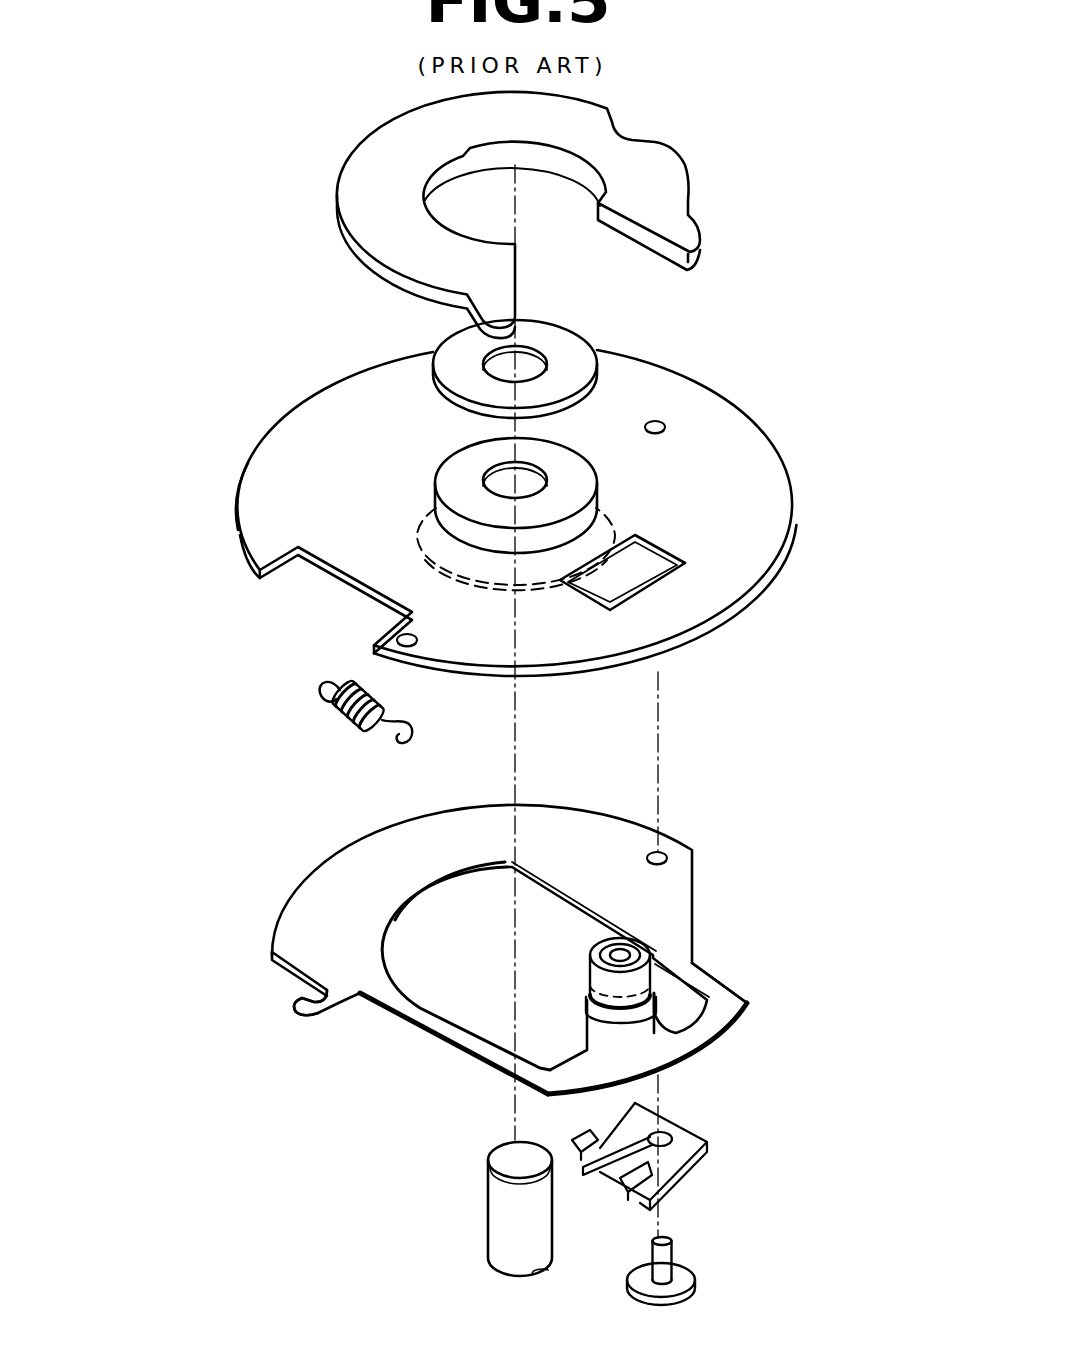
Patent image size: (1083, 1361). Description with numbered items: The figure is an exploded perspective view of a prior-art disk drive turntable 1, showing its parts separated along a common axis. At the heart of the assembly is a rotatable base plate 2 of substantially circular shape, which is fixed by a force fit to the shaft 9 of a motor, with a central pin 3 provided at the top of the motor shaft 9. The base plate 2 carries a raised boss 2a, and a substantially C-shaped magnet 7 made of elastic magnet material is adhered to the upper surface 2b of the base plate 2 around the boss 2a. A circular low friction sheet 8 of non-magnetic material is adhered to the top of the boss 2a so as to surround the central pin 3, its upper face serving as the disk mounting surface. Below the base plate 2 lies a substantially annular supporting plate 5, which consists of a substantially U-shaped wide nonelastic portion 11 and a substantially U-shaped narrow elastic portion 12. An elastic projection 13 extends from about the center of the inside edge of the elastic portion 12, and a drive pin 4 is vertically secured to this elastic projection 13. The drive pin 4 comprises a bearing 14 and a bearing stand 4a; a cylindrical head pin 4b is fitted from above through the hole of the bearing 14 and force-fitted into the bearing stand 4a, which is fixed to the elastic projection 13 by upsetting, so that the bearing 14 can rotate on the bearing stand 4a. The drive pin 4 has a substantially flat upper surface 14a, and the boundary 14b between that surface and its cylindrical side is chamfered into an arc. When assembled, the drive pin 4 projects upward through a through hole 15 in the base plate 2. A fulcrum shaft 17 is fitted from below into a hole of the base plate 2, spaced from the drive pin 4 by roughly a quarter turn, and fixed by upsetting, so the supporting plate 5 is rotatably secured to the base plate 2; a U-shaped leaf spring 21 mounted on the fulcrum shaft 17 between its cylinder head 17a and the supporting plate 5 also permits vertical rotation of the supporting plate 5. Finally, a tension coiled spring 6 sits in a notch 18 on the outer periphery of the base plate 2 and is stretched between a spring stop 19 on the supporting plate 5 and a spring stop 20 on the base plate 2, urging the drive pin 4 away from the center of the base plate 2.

The turntable 1 is at (305, 610).
The rotatable base plate 2 is at (480, 541).
The boss 2a is at (585, 470).
The upper surface 2b is at (252, 525).
The central pin 3 is at (507, 1162).
The drive pin 4 is at (650, 992).
The bearing stand 4a is at (625, 1022).
The cylindrical head pin 4b is at (625, 952).
The supporting plate 5 is at (262, 895).
The spring 6 is at (342, 715).
The magnet 7 is at (672, 190).
The low friction sheet 8 is at (548, 345).
The shaft 9 is at (486, 1196).
The nonelastic portion 11 is at (511, 930).
The elastic portion 12 is at (688, 1040).
The elastic projection 13 is at (595, 1030).
The bearing 14 is at (650, 941).
The upper surface 14a is at (597, 957).
The boundary 14b is at (665, 970).
The through hole 15 is at (653, 580).
The fulcrum shaft 17 is at (704, 1261).
The cylinder head 17a is at (688, 1278).
The notch 18 is at (268, 578).
The spring stop 19 is at (300, 1005).
The spring stop 20 is at (416, 636).
The U-shaped leaf spring 21 is at (687, 1140).